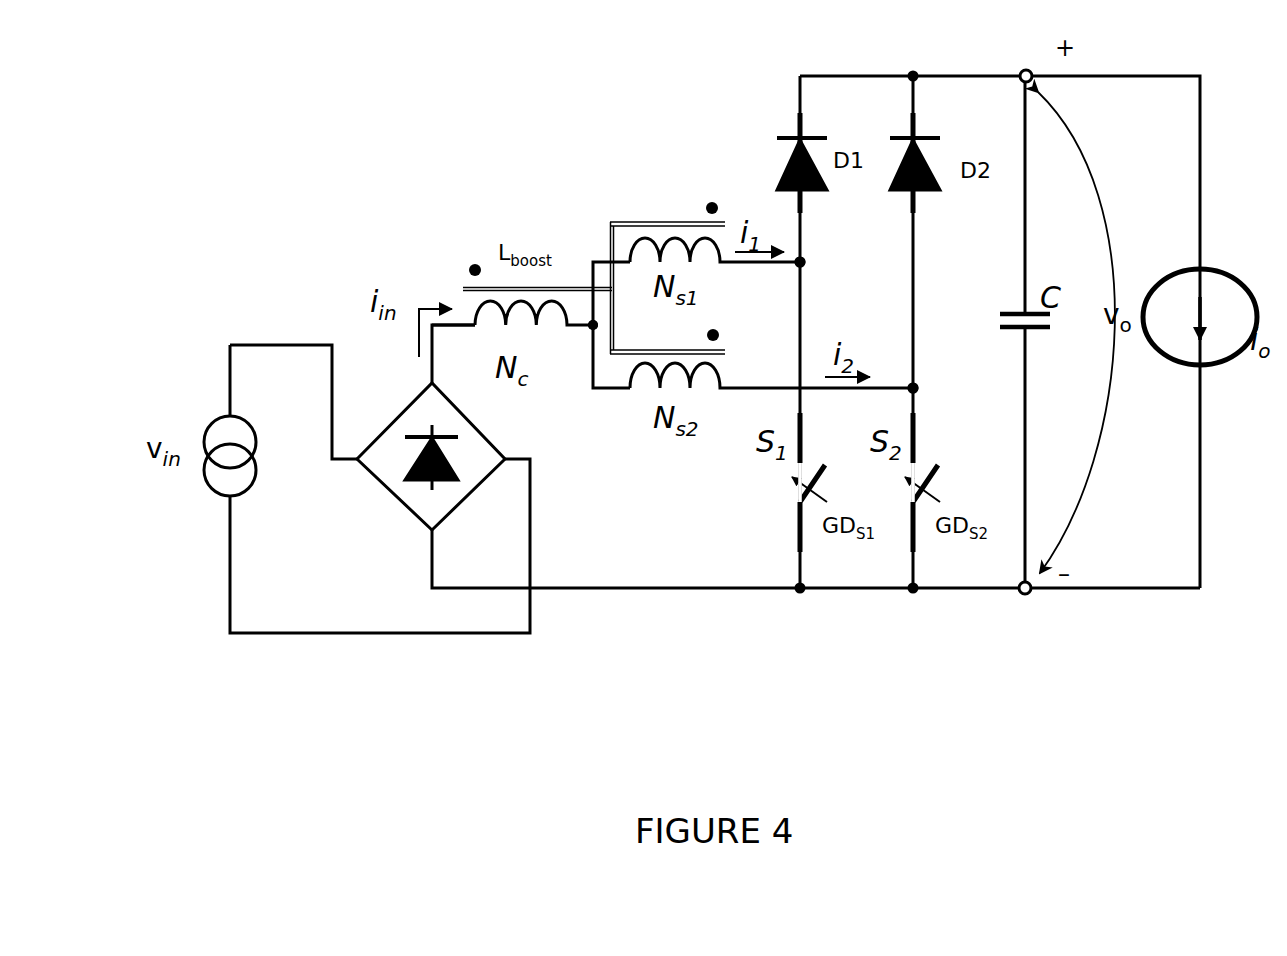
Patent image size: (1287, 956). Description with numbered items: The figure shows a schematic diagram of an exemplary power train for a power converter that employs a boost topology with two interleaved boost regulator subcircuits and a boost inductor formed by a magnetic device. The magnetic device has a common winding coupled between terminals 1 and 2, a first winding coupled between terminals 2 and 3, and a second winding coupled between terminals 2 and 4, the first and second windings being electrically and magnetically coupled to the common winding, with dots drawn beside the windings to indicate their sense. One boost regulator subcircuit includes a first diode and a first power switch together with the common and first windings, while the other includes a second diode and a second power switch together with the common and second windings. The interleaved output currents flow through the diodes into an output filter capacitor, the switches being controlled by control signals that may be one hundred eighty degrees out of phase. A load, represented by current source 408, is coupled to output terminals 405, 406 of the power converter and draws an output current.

The output terminal 405 is at (1019, 58).
The output terminal 406 is at (1031, 610).
The current source 408 is at (1200, 317).
The terminal 1 is at (453, 349).
The terminal 2 is at (580, 343).
The terminal 3 is at (793, 277).
The terminal 4 is at (929, 384).